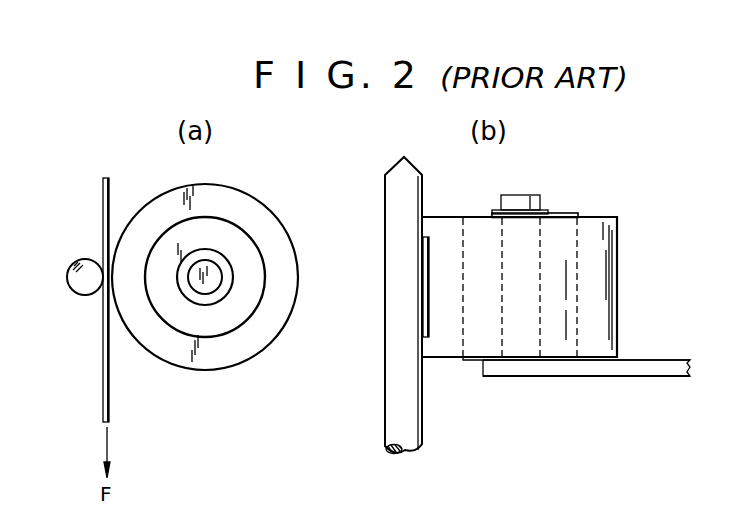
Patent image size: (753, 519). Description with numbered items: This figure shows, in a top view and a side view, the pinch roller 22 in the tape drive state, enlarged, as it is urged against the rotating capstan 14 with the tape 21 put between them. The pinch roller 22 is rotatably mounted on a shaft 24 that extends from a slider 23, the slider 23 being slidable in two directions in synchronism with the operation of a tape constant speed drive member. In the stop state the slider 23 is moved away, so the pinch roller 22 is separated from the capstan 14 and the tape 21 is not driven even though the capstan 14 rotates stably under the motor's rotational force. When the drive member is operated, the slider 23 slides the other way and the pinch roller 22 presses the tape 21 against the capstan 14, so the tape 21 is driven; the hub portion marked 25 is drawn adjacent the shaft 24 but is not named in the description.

The capstan 14 is at (84, 294).
The tape 21 is at (103, 207).
The pinch roller 22 is at (266, 208).
The slider 23 is at (600, 377).
The shaft 24 is at (214, 269).
The hub flange 25 is at (263, 289).